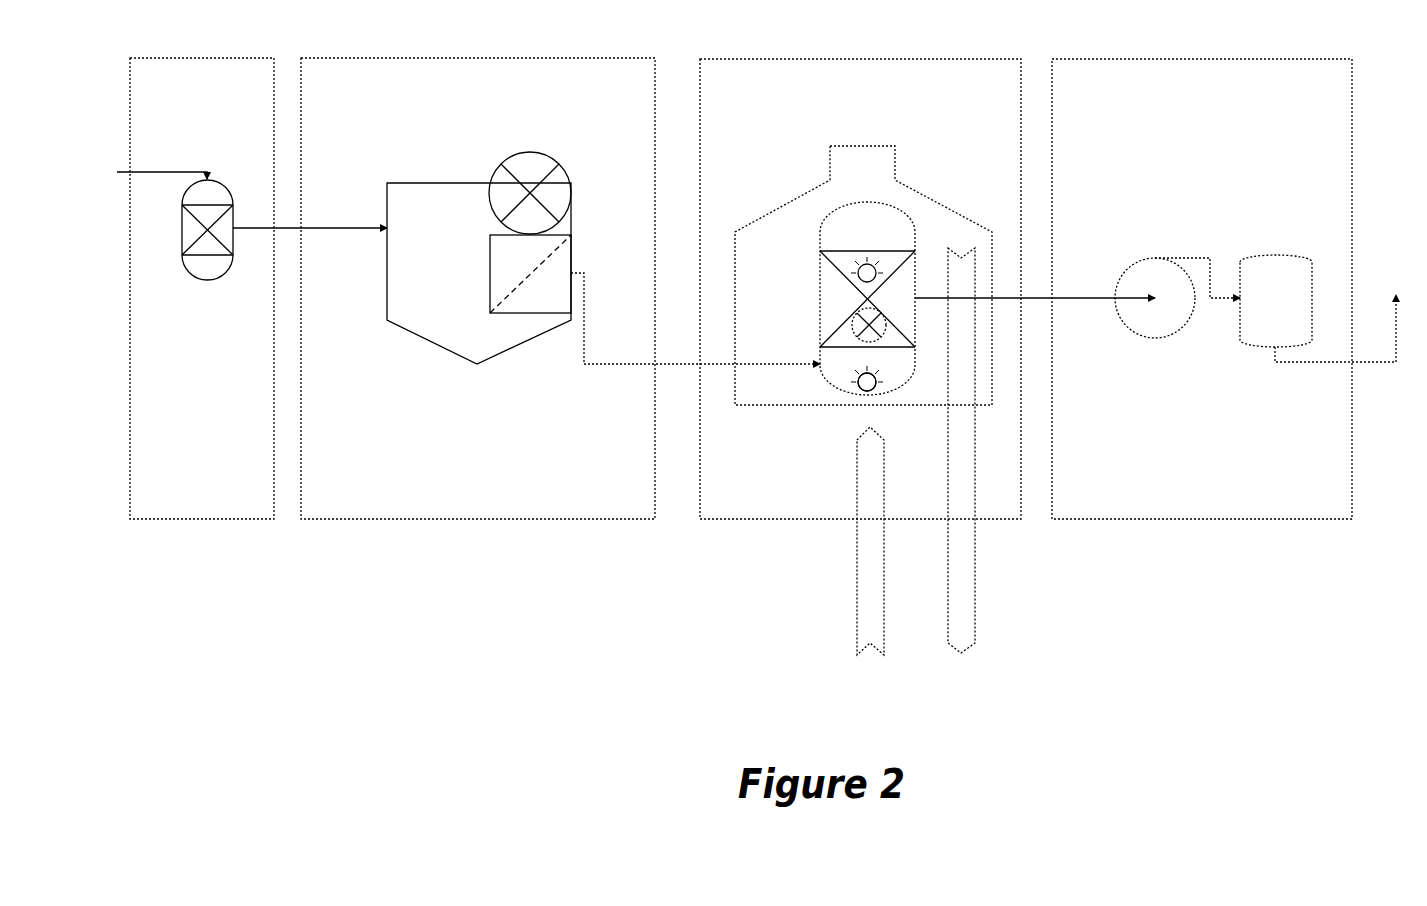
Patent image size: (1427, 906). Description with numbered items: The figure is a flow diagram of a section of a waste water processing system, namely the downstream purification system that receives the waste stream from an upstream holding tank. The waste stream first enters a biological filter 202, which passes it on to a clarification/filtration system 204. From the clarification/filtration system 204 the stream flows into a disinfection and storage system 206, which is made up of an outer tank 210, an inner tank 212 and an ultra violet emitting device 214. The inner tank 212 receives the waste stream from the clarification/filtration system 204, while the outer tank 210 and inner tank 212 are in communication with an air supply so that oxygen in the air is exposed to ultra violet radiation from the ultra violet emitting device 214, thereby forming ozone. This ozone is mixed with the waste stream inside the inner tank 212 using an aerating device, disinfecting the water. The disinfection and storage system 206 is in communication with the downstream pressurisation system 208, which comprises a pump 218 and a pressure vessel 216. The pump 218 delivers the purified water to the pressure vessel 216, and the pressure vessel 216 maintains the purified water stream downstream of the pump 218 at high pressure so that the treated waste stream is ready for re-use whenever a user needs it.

The biological filter 202 is at (190, 78).
The clarification/filtration system 204 is at (428, 86).
The disinfection and storage system 206 is at (800, 88).
The pressurisation system 208 is at (1148, 88).
The outer tank 210 is at (815, 188).
The inner tank 212 is at (820, 294).
The ultra violet (UV) emitting device 214 is at (862, 382).
The pressure vessel 216 is at (1287, 255).
The pump 218 is at (1150, 258).